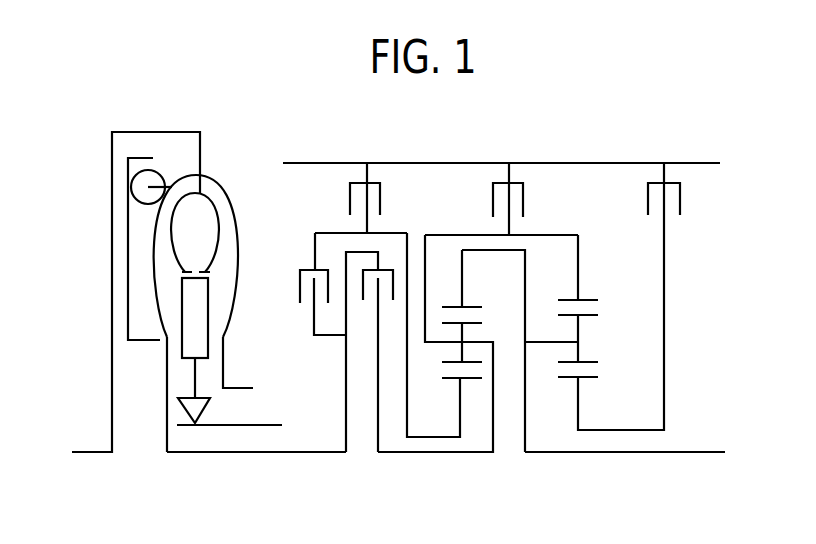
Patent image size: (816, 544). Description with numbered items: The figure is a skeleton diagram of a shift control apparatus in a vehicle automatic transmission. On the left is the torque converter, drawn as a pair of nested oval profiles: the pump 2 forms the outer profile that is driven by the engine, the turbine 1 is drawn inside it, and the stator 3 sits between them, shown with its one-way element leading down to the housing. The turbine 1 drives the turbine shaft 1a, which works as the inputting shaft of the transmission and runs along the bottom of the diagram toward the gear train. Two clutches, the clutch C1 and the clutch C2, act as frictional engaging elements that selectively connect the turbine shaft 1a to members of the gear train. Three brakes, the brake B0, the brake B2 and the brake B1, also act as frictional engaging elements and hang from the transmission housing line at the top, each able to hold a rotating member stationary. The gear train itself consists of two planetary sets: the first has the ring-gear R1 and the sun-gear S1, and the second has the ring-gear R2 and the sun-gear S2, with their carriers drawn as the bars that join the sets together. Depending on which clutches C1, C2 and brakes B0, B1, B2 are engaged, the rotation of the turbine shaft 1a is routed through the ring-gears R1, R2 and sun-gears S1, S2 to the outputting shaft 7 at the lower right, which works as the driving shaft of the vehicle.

The turbine 1 is at (163, 247).
The turbine shaft 1a is at (243, 455).
The pump 2 is at (223, 203).
The stator 3 is at (190, 307).
The outputting shaft 7 is at (662, 455).
The brake B0 is at (350, 200).
The brake B1 is at (648, 203).
The brake B2 is at (493, 200).
The clutch C1 is at (302, 268).
The clutch C2 is at (363, 288).
The ring-gear R1 is at (472, 307).
The ring-gear R2 is at (588, 298).
The sun-gear S1 is at (452, 378).
The sun-gear S2 is at (568, 378).